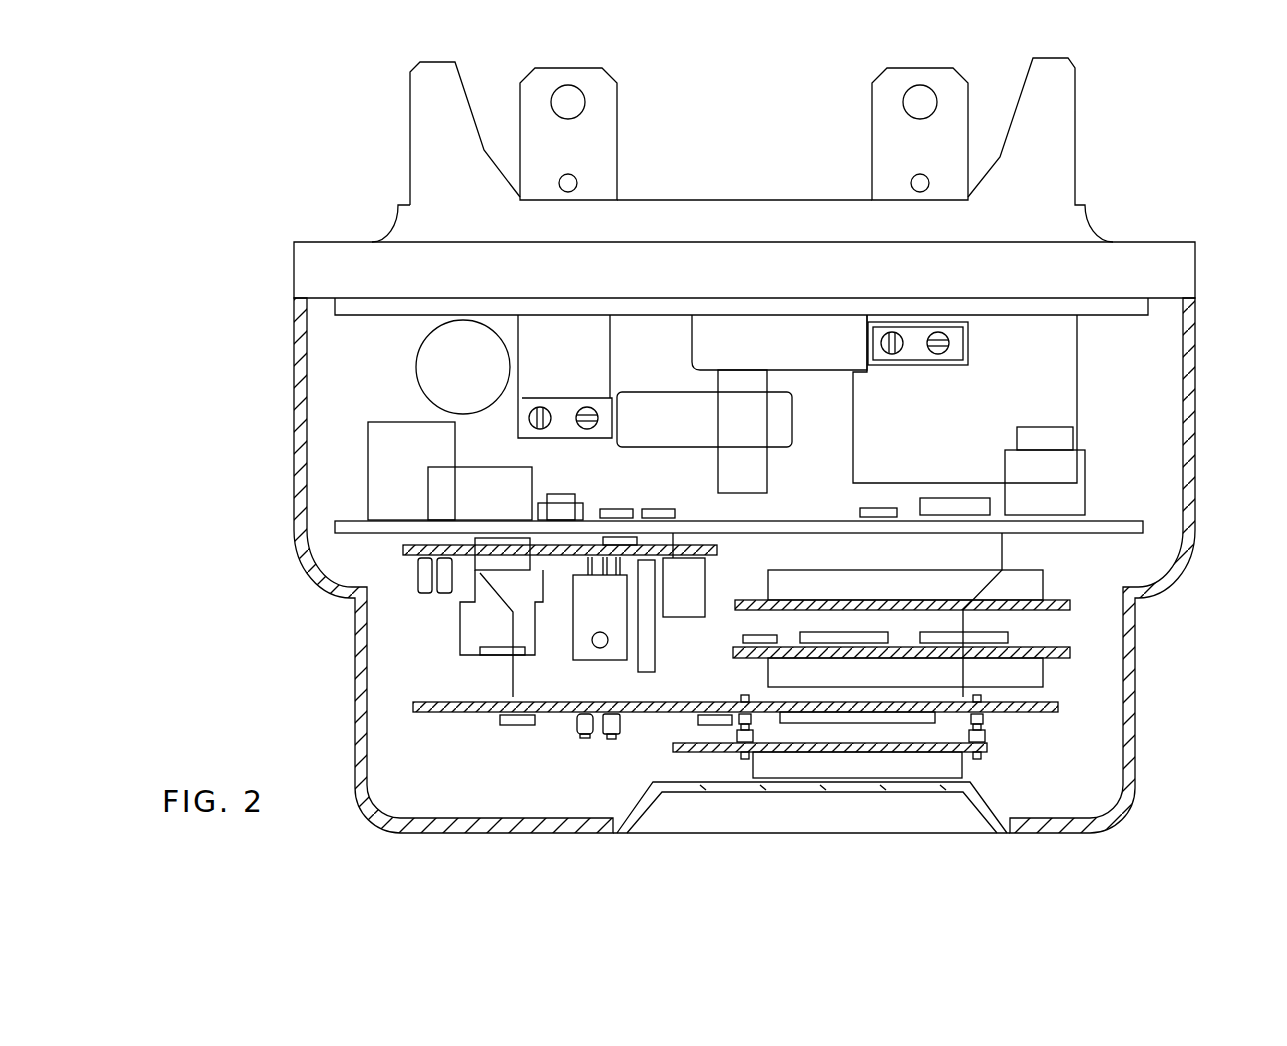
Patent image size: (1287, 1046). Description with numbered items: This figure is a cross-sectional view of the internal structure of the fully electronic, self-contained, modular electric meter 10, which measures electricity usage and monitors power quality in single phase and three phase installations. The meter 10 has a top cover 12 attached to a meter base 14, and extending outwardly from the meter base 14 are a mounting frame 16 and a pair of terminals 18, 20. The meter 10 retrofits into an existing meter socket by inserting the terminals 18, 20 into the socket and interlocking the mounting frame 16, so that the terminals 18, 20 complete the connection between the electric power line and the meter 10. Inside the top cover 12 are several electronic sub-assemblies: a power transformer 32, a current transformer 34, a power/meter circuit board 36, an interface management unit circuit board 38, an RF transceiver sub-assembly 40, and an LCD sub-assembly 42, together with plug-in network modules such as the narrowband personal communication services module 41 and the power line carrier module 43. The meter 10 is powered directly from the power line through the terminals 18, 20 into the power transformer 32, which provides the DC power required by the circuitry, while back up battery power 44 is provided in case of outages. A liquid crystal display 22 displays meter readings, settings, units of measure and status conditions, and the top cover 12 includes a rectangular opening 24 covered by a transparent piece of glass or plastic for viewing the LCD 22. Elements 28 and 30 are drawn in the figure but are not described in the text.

The electric meter 10 is at (727, 78).
The top cover 12 is at (1194, 440).
The meter base 14 is at (1182, 262).
The mounting frame 16 is at (1068, 130).
The terminal 18 is at (885, 148).
The terminal 20 is at (605, 166).
The liquid crystal display 22 is at (955, 765).
The rectangular opening 24 is at (882, 818).
The electronic components 28 is at (580, 733).
The window frame / lens 30 is at (653, 782).
The power transformer 32 is at (1062, 338).
The current transformer 34 is at (792, 418).
The power/meter circuit board 36 is at (1100, 522).
The interface management unit circuit board 38 is at (1040, 710).
The RF transceiver sub-assembly 40 is at (1062, 655).
The narrowband personal communication services module 41 is at (780, 603).
The LCD sub-assembly 42 is at (985, 746).
The power line carrier module 43 is at (411, 558).
The back up battery power 44 is at (418, 357).